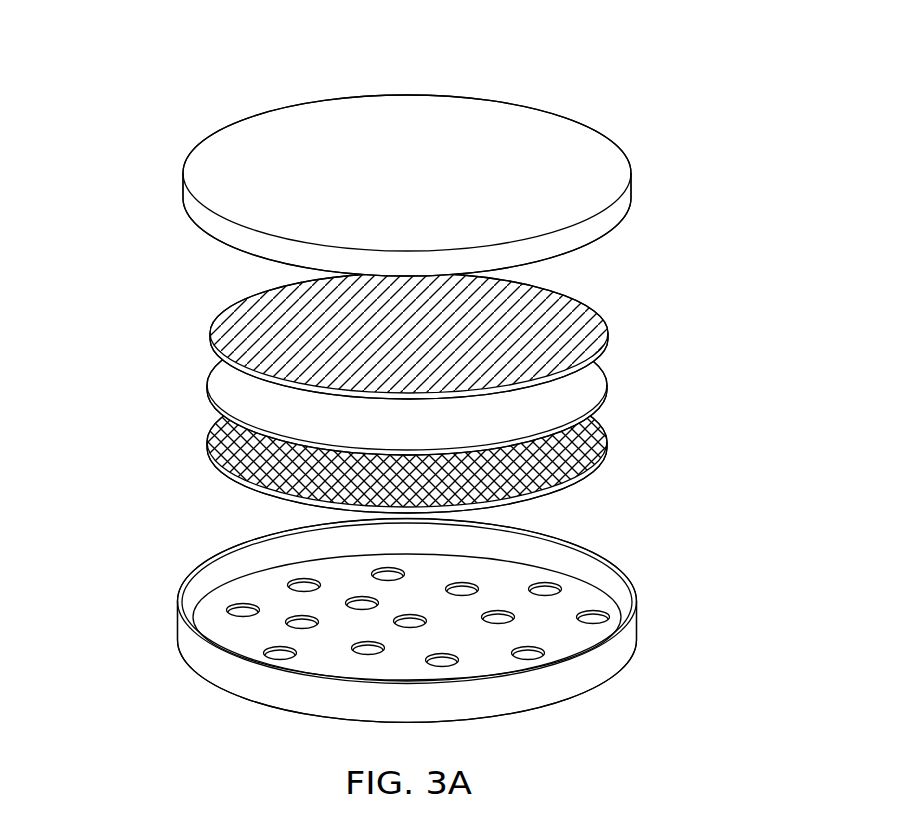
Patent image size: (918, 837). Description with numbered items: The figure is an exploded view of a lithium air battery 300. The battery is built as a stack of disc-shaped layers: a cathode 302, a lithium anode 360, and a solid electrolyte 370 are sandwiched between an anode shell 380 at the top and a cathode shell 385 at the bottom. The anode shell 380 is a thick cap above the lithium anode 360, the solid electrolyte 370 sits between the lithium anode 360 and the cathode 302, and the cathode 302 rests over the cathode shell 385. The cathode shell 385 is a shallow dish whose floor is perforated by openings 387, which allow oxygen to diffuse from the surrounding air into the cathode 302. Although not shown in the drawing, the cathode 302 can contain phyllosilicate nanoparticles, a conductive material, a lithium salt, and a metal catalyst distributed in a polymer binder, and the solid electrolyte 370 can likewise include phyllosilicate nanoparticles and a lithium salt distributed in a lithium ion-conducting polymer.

The battery 300 is at (158, 40).
The anode shell 380 is at (527, 106).
The lithium anode 360 is at (605, 307).
The solid electrolyte 370 is at (605, 383).
The cathode 302 is at (605, 437).
The openings 387 is at (558, 587).
The cathode shell 385 is at (638, 628).